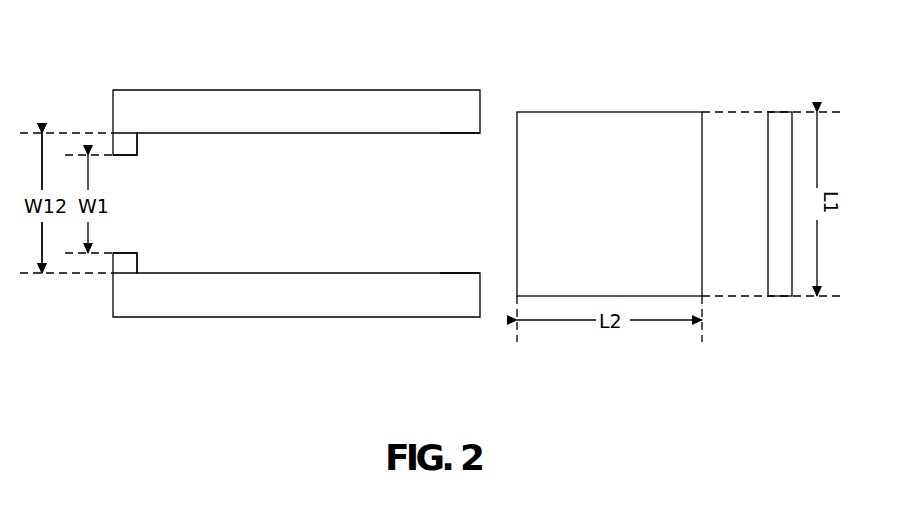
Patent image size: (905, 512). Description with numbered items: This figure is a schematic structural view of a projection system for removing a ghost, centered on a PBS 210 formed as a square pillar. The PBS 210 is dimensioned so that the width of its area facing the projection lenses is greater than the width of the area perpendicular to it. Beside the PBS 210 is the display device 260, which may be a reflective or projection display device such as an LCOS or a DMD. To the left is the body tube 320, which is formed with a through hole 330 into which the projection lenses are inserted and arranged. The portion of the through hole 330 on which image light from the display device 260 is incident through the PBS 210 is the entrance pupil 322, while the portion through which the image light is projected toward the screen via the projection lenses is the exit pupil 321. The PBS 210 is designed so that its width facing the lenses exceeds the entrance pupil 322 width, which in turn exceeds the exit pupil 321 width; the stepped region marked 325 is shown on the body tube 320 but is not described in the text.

The PBS 210 is at (598, 110).
The display device 260 is at (778, 114).
The body tube 320 is at (300, 110).
The exit pupil 321 is at (132, 187).
The entrance pupil 322 is at (495, 242).
The second step portion 325 is at (128, 267).
The through hole 330 is at (300, 253).